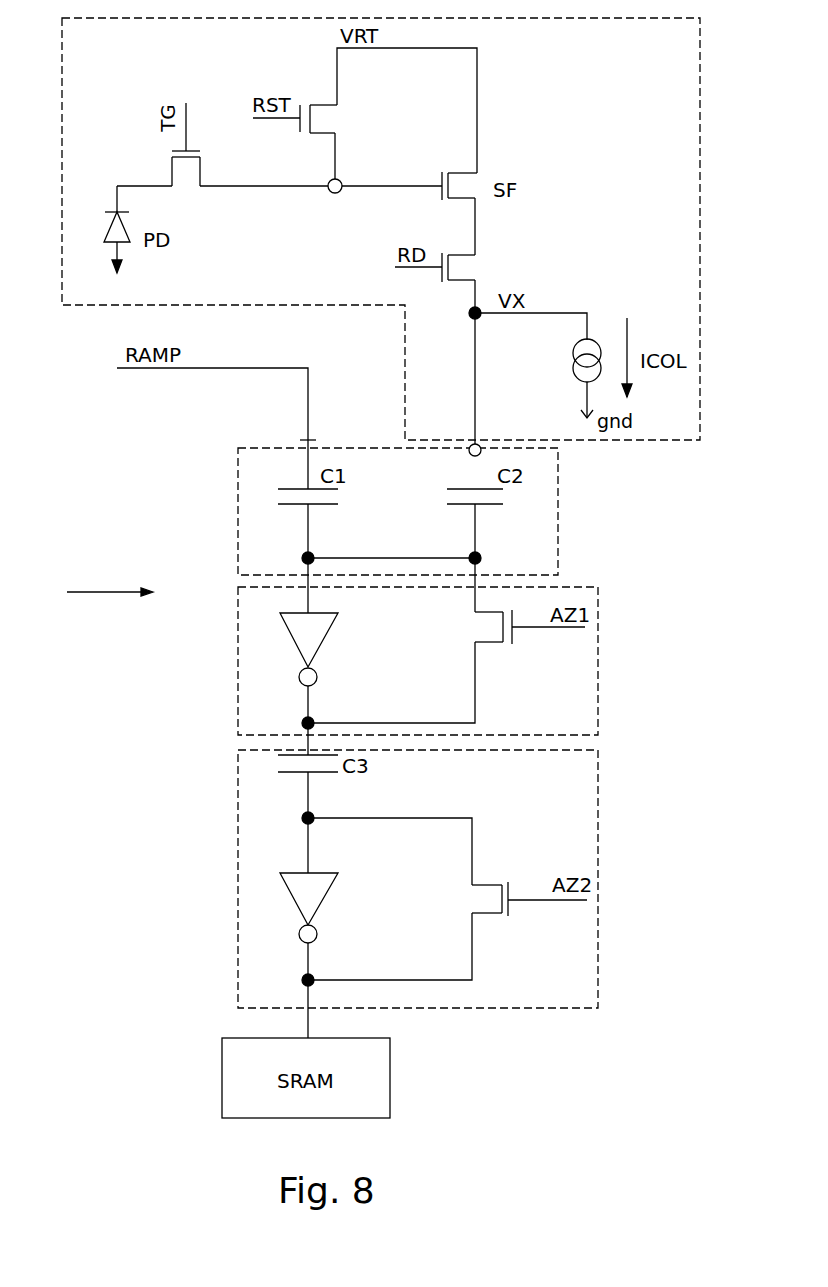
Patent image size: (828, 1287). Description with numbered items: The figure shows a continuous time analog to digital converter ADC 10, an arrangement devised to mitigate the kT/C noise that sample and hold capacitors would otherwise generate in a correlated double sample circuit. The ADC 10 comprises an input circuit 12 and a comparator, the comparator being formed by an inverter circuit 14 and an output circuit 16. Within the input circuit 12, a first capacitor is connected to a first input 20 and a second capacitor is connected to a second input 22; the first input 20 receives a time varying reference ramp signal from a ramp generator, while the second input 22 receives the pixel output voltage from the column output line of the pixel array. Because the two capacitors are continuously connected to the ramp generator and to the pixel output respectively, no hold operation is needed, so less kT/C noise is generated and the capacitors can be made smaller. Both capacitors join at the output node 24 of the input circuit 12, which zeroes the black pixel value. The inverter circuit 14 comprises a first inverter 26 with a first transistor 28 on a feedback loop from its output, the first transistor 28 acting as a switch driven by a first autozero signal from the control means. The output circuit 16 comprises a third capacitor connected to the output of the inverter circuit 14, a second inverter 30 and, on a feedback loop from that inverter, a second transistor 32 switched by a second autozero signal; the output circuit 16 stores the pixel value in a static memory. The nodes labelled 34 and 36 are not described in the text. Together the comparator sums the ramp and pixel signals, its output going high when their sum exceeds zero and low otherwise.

The analog to digital converter 10 is at (90, 593).
The input circuit 12 is at (238, 503).
The inverter circuit 14 is at (237, 665).
The output circuit 16 is at (237, 897).
The first input 20 is at (305, 447).
The second input 22 is at (473, 452).
The output node 24 is at (305, 557).
The first inverter 26 is at (327, 638).
The first transistor 28 is at (490, 645).
The second inverter 30 is at (327, 897).
The second transistor 32 is at (490, 915).
The output node 34 is at (303, 977).
The sense node 36 is at (330, 190).